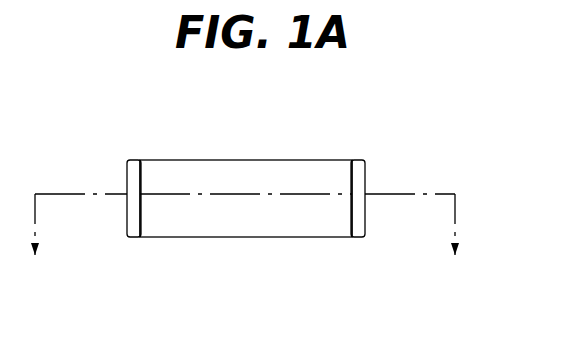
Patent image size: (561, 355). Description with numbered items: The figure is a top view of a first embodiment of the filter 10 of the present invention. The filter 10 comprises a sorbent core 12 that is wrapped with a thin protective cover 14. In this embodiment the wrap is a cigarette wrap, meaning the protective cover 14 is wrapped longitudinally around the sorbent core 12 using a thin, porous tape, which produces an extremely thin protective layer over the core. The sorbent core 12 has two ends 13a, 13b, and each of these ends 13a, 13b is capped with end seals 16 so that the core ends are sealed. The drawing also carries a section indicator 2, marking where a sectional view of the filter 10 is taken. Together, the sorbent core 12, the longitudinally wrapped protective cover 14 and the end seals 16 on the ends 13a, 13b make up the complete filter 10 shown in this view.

The filter 10 is at (270, 198).
The sorbent core 12 is at (184, 175).
The protective cover 14 is at (243, 172).
The end seals 16 is at (128, 172).
The end 13a is at (138, 226).
The end 13b is at (357, 228).
The section line 2- 2 is at (245, 250).